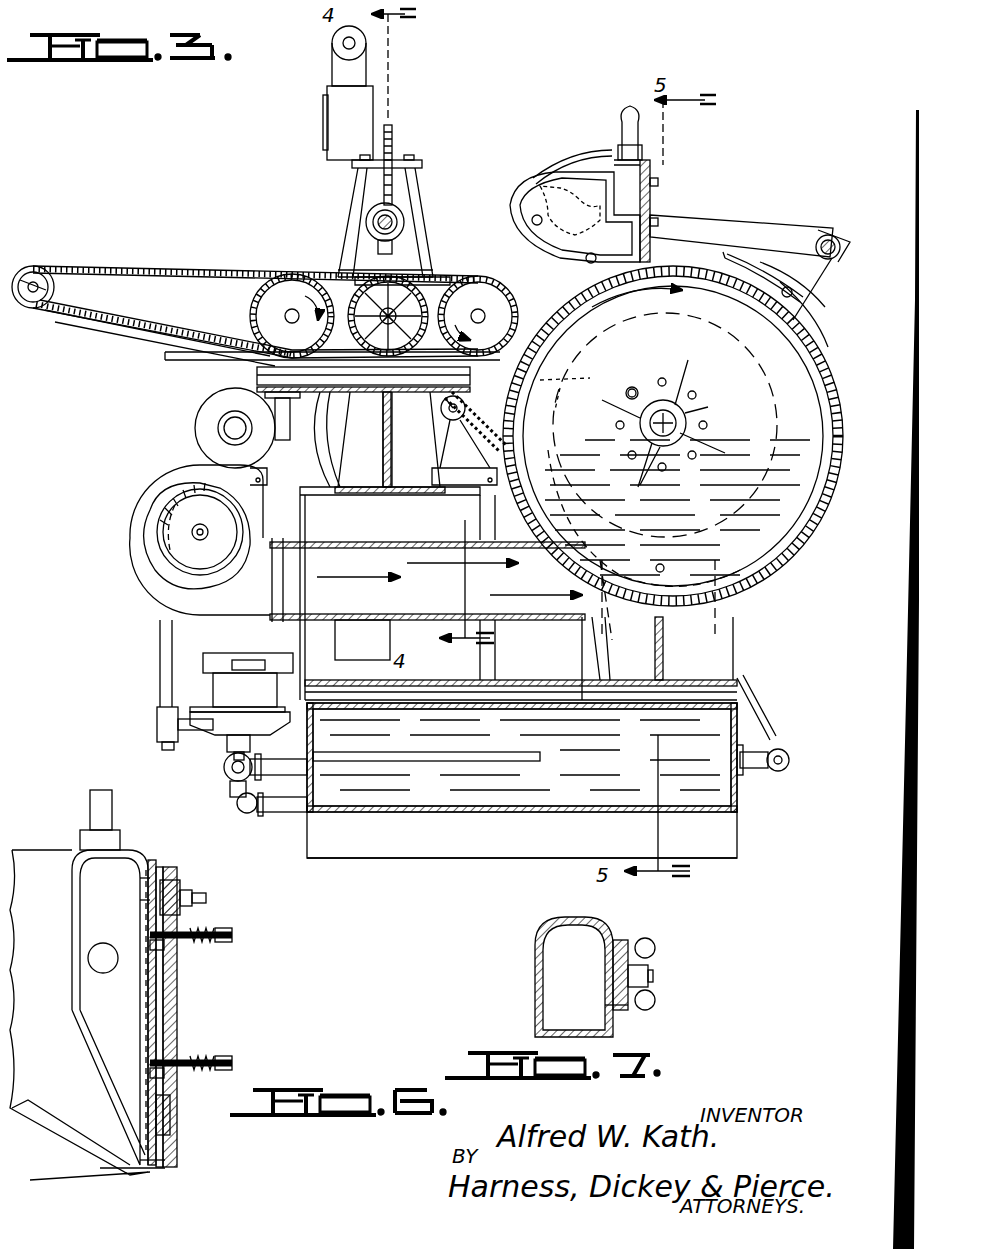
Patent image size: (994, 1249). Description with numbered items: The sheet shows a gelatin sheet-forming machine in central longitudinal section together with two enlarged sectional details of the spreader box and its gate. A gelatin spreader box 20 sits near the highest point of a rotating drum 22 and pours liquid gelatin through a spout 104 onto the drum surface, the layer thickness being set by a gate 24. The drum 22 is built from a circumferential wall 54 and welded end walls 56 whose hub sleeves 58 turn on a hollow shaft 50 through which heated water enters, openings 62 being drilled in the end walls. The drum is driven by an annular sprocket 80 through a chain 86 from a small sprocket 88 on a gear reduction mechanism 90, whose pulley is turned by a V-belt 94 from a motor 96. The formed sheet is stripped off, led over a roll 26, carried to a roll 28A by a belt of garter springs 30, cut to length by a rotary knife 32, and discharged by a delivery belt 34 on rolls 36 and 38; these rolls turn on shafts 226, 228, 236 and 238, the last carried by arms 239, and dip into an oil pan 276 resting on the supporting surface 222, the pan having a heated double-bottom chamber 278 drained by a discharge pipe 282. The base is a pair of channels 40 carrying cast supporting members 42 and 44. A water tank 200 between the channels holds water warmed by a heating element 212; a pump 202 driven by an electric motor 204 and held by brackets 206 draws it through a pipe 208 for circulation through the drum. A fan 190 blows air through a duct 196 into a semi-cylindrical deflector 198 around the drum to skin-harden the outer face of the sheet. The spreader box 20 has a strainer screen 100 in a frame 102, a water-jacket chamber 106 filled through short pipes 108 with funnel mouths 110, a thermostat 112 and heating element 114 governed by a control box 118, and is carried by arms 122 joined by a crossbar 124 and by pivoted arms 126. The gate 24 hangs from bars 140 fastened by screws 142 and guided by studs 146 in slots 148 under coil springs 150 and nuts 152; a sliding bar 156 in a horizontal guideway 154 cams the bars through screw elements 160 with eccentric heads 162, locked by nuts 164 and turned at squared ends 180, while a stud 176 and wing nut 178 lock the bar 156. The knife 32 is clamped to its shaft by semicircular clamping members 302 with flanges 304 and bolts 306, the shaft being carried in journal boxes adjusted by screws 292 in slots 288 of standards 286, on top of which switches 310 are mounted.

In FIG. 3, the gelatin spreader box 20 is at (520, 190).
In FIG. 6, the gelatin spreader box 20 is at (60, 850).
In FIG. 7, the gelatin spreader box 20 is at (530, 926).
In FIG. 3, the drum 22 is at (565, 298).
In FIG. 3, the spreader box gate 24 is at (655, 270).
In FIG. 6, the spreader box gate 24 is at (170, 1160).
In FIG. 3, the roll 26 is at (473, 333).
In FIG. 3, the pedestal 28A is at (373, 465).
In FIG. 3, the garter springs 30 is at (430, 265).
In FIG. 3, the rotary knife 32 is at (380, 262).
In FIG. 3, the delivery belt 34 is at (155, 266).
In FIG. 3, the roll 36 is at (250, 306).
In FIG. 3, the roll 38 is at (62, 292).
In FIG. 3, the channels 40 is at (485, 862).
In FIG. 3, the cast supporting member 42 is at (742, 680).
In FIG. 3, the cast supporting member 44 is at (462, 682).
In FIG. 3, the hollow shaft 50 is at (638, 426).
In FIG. 3, the circumferential wall 54 is at (810, 310).
In FIG. 3, the end walls 56 is at (817, 338).
In FIG. 3, the hub sleeves 58 is at (700, 408).
In FIG. 3, the openings 62 is at (662, 380).
In FIG. 3, the annular sprocket 80 is at (630, 388).
In FIG. 3, the chain 86 is at (559, 373).
In FIG. 3, the small sprocket 88 is at (560, 392).
In FIG. 3, the gear reduction mechanism 90 is at (416, 439).
In FIG. 3, the V-belt 94 is at (250, 385).
In FIG. 3, the motor 96 is at (196, 420).
In FIG. 3, the strainer screen 100 is at (570, 170).
In FIG. 3, the frame 102 is at (540, 170).
In FIG. 3, the discharge spout 104 is at (636, 290).
In FIG. 6, the discharge spout 104 is at (140, 1175).
In FIG. 6, the chamber 106 is at (90, 884).
In FIG. 7, the chamber 106 is at (540, 963).
In FIG. 3, the short pipes 108 is at (645, 152).
In FIG. 6, the short pipes 108 is at (112, 808).
In FIG. 3, the funnel-like mouths 110 is at (626, 118).
In FIG. 3, the thermostat 112 is at (530, 218).
In FIG. 3, the electrical heating element 114 is at (560, 256).
In FIG. 3, the control box 118 is at (334, 60).
In FIG. 3, the arm 122 is at (808, 290).
In FIG. 3, the crossbar 124 is at (763, 276).
In FIG. 3, the arm 126 is at (715, 220).
In FIG. 6, the bars 140 is at (178, 1000).
In FIG. 6, the screws 142 is at (176, 1108).
In FIG. 6, the studs 146 is at (225, 935).
In FIG. 6, the slots 148 is at (170, 950).
In FIG. 6, the coil springs 150 is at (212, 932).
In FIG. 6, the nut 152 is at (232, 940).
In FIG. 6, the horizontal guideway 154 is at (165, 865).
In FIG. 7, the horizontal guideway 154 is at (620, 940).
In FIG. 6, the transversely slidable bar 156 is at (180, 880).
In FIG. 7, the transversely slidable bar 156 is at (605, 1005).
In FIG. 6, the screw element 160 is at (145, 915).
In FIG. 6, the cylindrical head 162 is at (145, 900).
In FIG. 6, the nut 164 is at (192, 893).
In FIG. 7, the stud 176 is at (653, 976).
In FIG. 7, the wing nut 178 is at (654, 945).
In FIG. 6, the squared end 180 is at (206, 898).
In FIG. 3, the fan 190 is at (140, 510).
In FIG. 3, the duct 196 is at (330, 625).
In FIG. 3, the sheet metal deflector 198 is at (780, 578).
In FIG. 3, the water tank 200 is at (575, 823).
In FIG. 3, the water pump 202 is at (240, 716).
In FIG. 3, the electric motor 204 is at (170, 630).
In FIG. 3, the brackets 206 is at (272, 653).
In FIG. 3, the pipe 208 is at (258, 815).
In FIG. 3, the electrical heating element 212 is at (405, 762).
In FIG. 3, the supporting surface 222 is at (349, 439).
In FIG. 3, the shaft 226 is at (478, 316).
In FIG. 3, the shaft 228 is at (383, 272).
In FIG. 3, the shaft 236 is at (290, 322).
In FIG. 3, the shaft 238 is at (40, 268).
In FIG. 3, the arms 239 is at (160, 328).
In FIG. 3, the open top pan 276 is at (180, 362).
In FIG. 3, the chamber 278 is at (406, 439).
In FIG. 3, the discharge pipe 282 is at (282, 440).
In FIG. 3, the standard 286 is at (360, 205).
In FIG. 3, the slot 288 is at (412, 166).
In FIG. 3, the rotatable screw 292 is at (392, 145).
In FIG. 3, the semicircular clamping members 302 is at (402, 216).
In FIG. 3, the radially directed flanges 304 is at (398, 210).
In FIG. 3, the bolts 306 is at (380, 245).
In FIG. 3, the switches 310 is at (327, 124).